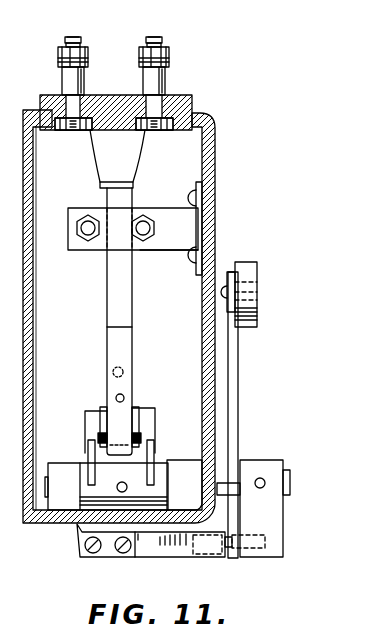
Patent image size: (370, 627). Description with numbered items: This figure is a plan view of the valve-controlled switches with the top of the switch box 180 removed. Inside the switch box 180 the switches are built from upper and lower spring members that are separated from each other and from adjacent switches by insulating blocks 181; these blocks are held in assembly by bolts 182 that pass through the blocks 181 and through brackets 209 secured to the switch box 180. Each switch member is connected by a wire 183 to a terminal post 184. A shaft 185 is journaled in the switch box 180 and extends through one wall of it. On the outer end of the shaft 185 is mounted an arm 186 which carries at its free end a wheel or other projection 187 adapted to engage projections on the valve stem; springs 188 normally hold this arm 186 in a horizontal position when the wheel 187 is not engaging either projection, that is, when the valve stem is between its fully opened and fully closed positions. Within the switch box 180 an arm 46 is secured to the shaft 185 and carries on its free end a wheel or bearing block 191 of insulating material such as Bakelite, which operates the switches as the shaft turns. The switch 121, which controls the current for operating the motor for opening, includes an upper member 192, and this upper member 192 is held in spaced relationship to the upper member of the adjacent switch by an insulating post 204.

The switch box 180 is at (215, 150).
The wire 183 is at (116, 138).
The terminal post 184 is at (150, 38).
The insulating block 181 is at (77, 212).
The bolt 182 is at (140, 240).
The bracket 209 is at (158, 251).
The upper member 192 is at (132, 336).
The switch 121 is at (125, 375).
The insulating post 204 is at (126, 398).
The wheel or bearing block 191 is at (100, 410).
The arm 46 is at (150, 449).
The wheel or other projection 187 is at (245, 262).
The arm 186 is at (239, 378).
The shaft 185 is at (225, 482).
The spring 188 is at (185, 557).